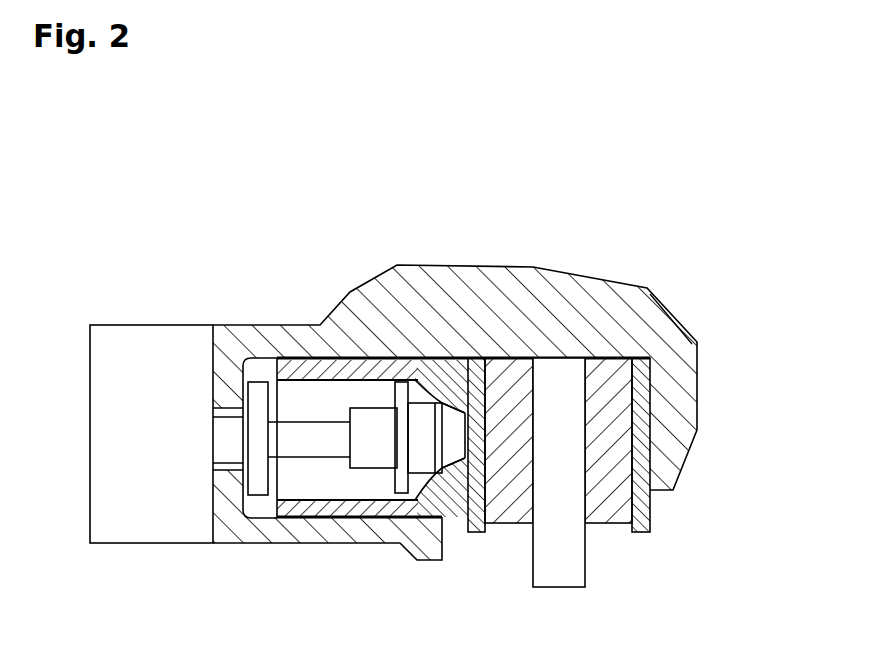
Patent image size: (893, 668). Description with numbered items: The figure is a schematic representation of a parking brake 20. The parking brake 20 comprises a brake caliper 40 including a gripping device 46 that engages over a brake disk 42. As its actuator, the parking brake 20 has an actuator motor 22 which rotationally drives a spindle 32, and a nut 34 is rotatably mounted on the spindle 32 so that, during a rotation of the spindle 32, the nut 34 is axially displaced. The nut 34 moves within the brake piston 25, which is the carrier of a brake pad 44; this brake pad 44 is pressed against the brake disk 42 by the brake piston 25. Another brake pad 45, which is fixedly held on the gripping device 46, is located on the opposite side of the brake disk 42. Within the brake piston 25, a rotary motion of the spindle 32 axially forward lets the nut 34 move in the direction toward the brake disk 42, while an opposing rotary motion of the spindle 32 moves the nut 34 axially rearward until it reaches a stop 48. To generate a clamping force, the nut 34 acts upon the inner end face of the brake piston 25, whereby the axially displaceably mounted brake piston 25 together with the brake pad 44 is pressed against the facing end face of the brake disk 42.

The parking brake 20 is at (410, 403).
The actuator motor 22 is at (135, 322).
The brake piston 25 is at (283, 372).
The spindle 32 is at (308, 440).
The nut 34 is at (367, 425).
The brake caliper 40 is at (470, 277).
The brake disk 42 is at (558, 568).
The brake pad 44 is at (508, 518).
The brake pad 45 is at (609, 512).
The gripping device 46 is at (673, 450).
The stop 48 is at (256, 402).